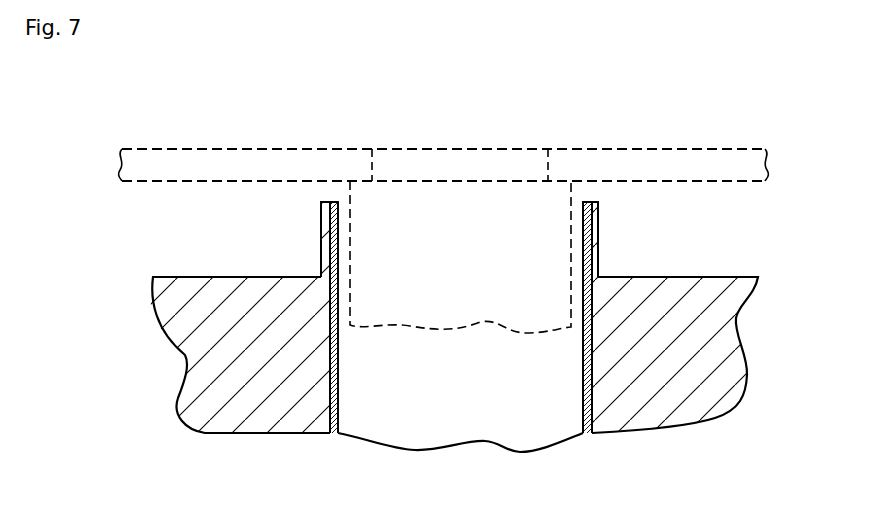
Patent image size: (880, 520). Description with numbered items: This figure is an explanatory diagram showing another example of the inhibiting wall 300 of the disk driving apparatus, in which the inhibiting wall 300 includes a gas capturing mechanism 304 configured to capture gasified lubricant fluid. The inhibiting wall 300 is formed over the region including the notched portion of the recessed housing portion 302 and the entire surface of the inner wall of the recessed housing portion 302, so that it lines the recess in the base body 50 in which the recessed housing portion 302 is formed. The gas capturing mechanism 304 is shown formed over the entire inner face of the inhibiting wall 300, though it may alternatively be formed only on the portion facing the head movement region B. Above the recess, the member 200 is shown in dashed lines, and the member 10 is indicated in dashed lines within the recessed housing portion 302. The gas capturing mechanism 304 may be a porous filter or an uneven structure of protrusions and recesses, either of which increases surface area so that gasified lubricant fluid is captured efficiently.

The ground / foundation body 50 is at (697, 403).
The inhibiting wall 300 is at (327, 212).
The recessed housing portion 302 is at (336, 372).
The gas capturing mechanism 304 is at (338, 292).
The pile / pipe member 10 is at (571, 227).
The upper structure beam 200 is at (663, 165).
The head movement region B is at (208, 263).